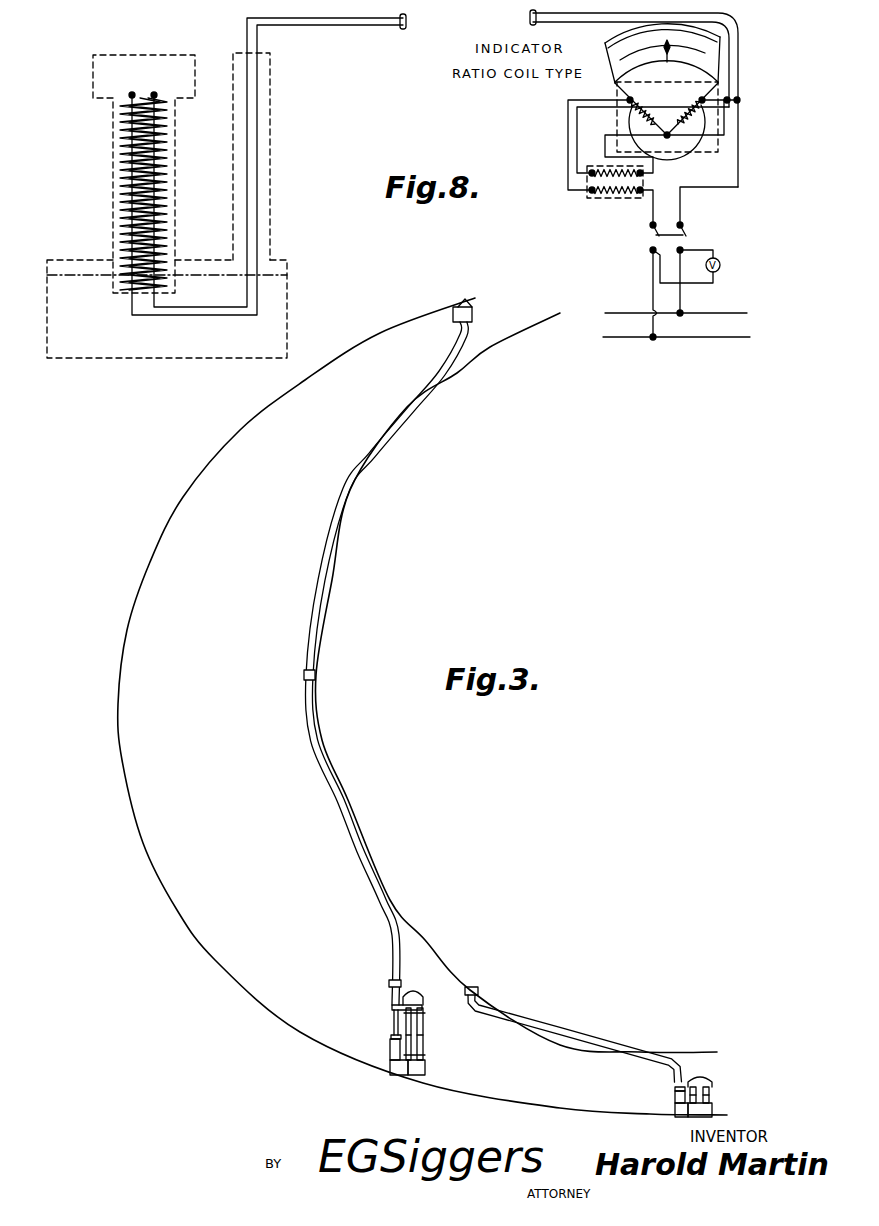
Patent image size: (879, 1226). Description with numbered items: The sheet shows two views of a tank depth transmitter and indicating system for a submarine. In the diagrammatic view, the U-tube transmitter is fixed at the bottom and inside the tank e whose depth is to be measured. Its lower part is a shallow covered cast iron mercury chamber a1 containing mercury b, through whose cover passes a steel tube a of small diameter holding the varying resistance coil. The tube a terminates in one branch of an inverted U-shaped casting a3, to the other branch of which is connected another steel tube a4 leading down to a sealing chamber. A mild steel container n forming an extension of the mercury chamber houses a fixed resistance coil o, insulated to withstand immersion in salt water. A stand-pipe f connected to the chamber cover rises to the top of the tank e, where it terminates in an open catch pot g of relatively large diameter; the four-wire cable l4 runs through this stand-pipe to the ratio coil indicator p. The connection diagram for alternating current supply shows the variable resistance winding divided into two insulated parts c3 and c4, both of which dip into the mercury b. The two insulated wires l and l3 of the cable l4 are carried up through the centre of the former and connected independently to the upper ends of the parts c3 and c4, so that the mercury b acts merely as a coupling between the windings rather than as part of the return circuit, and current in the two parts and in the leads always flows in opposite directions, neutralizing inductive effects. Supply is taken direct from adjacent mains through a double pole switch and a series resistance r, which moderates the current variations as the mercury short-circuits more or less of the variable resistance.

In FIG. 3, the steel tube a is at (410, 1020).
In FIG. 8, the mercury chamber a1 is at (287, 320).
In FIG. 3, the mercury chamber a1 is at (678, 1117).
In FIG. 3, the inverted U-shaped casting a3 is at (413, 990).
In FIG. 3, the steel tube a4 is at (422, 1042).
In FIG. 8, the mercury b is at (82, 273).
In FIG. 8, the variable resistance winding part c3 is at (118, 163).
In FIG. 8, the variable resistance winding part c4 is at (163, 160).
In FIG. 3, the tank e is at (128, 618).
In FIG. 8, the stand-pipe f is at (272, 157).
In FIG. 3, the stand-pipe f is at (348, 848).
In FIG. 3, the catch pot g is at (470, 313).
In FIG. 8, the cable wire l is at (220, 317).
In FIG. 8, the cable wire l3 is at (220, 306).
In FIG. 8, the four-wire cable l4 is at (310, 27).
In FIG. 3, the mild steel container n is at (392, 1047).
In FIG. 8, the fixed resistance coil o is at (600, 167).
In FIG. 8, the ratio coil indicator p is at (705, 60).
In FIG. 8, the series resistance r is at (613, 199).